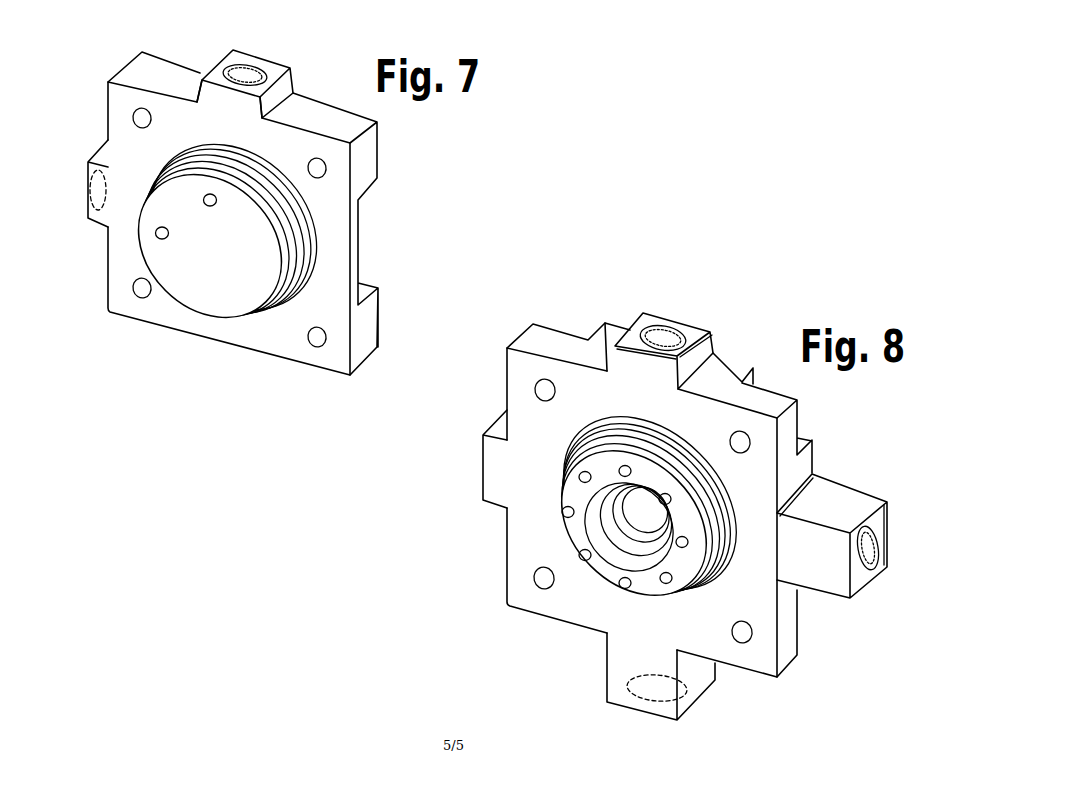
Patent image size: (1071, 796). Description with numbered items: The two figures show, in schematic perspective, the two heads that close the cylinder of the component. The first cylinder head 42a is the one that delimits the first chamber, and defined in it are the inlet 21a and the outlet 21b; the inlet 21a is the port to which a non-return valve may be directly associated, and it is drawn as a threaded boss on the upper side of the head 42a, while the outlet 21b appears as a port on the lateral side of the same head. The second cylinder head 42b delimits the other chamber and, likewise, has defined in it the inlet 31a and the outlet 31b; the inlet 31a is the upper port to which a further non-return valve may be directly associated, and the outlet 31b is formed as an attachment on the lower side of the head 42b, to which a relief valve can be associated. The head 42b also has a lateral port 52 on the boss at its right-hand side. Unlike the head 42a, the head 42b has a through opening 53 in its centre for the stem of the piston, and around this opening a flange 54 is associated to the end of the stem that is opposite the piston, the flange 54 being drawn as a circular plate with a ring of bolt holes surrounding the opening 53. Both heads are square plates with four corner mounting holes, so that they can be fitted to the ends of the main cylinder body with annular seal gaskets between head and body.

In FIG. 7, the inlet 21a is at (266, 72).
In FIG. 7, the outlet 21b is at (86, 191).
In FIG. 7, the cylinder head 42a is at (164, 344).
In FIG. 8, the inlet 31a is at (667, 338).
In FIG. 8, the outlet 31b is at (648, 712).
In FIG. 8, the cylinder head 42b is at (598, 504).
In FIG. 8, the side port 52 is at (873, 553).
In FIG. 8, the through opening 53 is at (641, 518).
In FIG. 8, the flange 54 is at (565, 531).